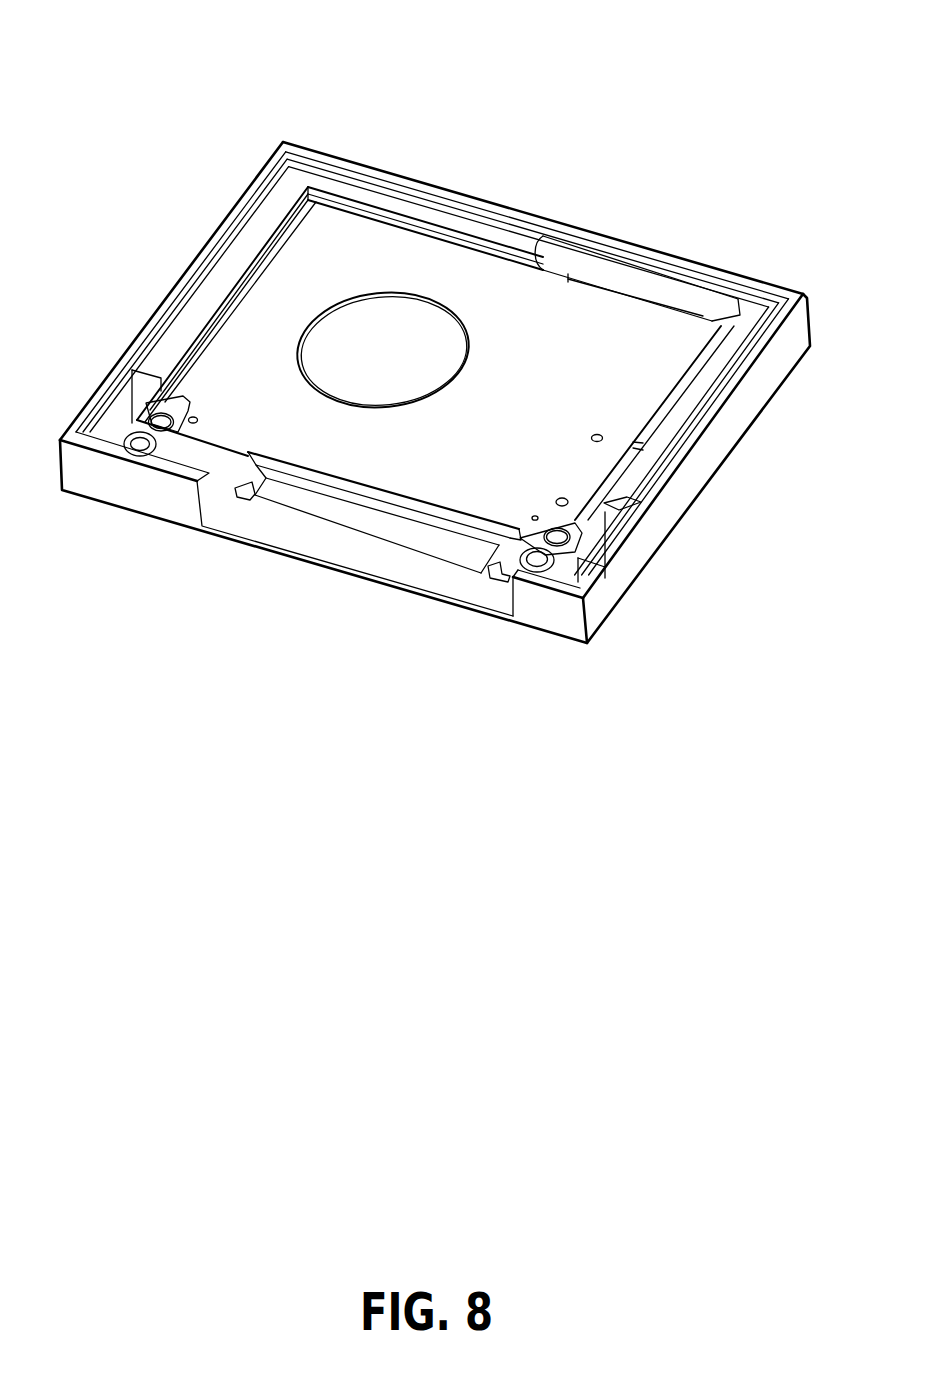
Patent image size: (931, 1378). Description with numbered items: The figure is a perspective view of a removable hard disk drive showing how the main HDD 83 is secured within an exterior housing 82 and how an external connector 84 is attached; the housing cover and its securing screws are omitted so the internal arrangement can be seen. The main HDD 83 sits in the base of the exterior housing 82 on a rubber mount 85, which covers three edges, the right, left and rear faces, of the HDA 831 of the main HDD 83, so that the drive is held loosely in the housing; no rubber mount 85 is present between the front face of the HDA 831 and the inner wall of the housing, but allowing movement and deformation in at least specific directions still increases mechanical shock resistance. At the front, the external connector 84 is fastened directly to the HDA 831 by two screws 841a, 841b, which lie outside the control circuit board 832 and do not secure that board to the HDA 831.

The exterior housing 82 is at (113, 365).
The rubber mount 85 is at (273, 205).
The main HDD 83 is at (470, 268).
The HDA 831 is at (633, 483).
The control circuit board 832 is at (540, 242).
The external connector 84 is at (223, 497).
The screw 841a is at (556, 537).
The screw 841b is at (180, 412).